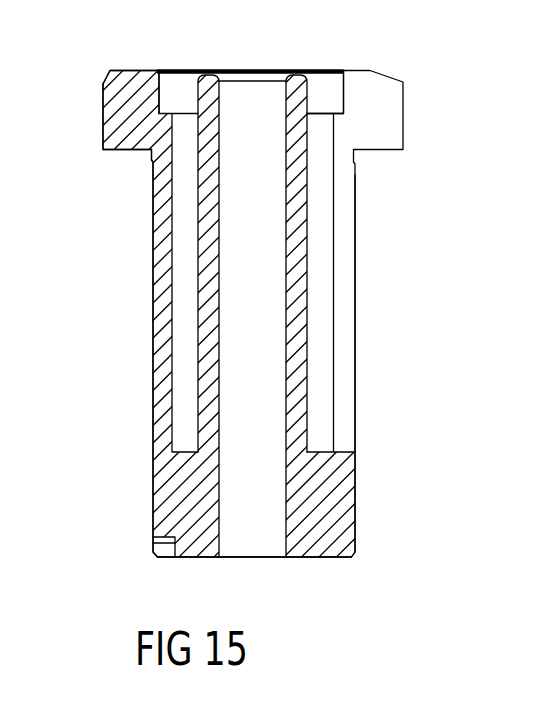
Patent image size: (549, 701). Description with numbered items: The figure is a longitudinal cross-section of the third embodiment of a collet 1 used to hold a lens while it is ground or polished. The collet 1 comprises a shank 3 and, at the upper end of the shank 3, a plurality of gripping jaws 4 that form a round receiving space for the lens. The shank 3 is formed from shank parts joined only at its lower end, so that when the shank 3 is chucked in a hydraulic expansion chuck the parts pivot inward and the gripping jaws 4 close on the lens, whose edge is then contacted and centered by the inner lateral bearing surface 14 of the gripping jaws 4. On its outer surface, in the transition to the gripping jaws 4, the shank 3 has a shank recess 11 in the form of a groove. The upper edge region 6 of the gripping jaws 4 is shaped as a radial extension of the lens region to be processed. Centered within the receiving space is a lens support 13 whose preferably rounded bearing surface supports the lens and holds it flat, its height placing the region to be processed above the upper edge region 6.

The collet 1 is at (456, 32).
The shank 3 is at (167, 498).
The gripping jaws 4 is at (108, 116).
The upper edge region 6 is at (108, 76).
The shank recess 11 is at (150, 157).
The lens support 13 is at (297, 117).
The inner lateral bearing surface 14 is at (163, 100).